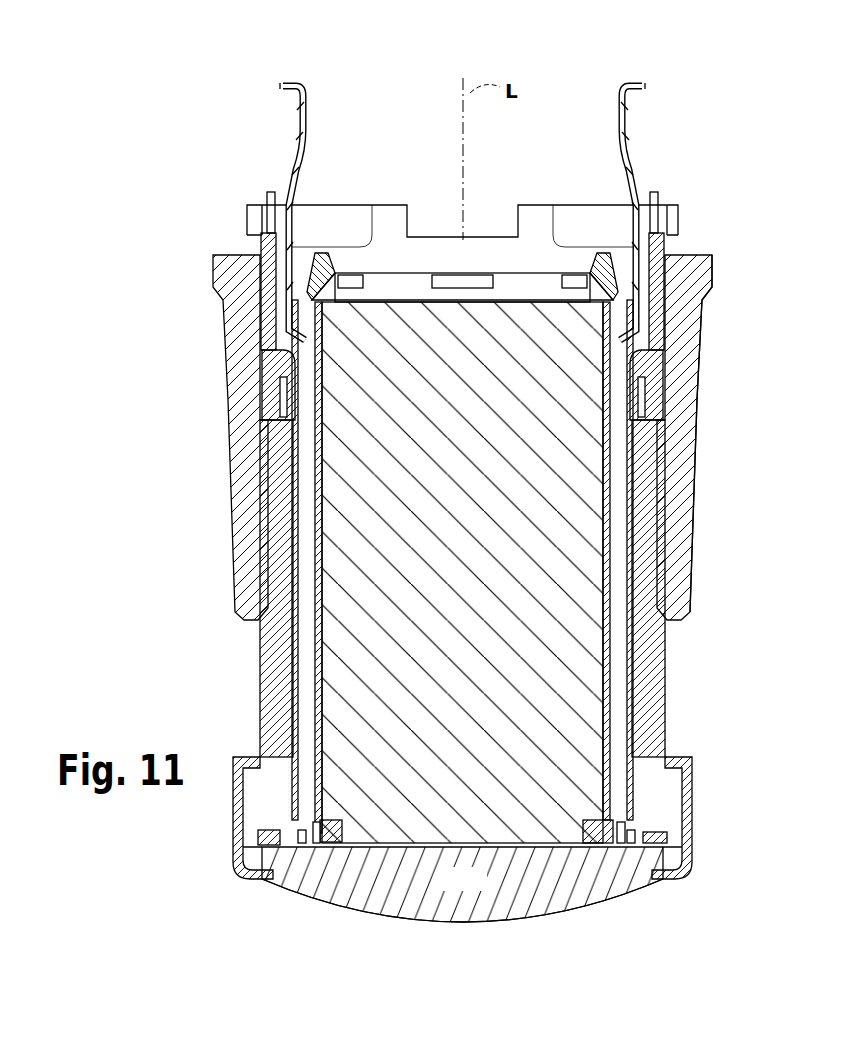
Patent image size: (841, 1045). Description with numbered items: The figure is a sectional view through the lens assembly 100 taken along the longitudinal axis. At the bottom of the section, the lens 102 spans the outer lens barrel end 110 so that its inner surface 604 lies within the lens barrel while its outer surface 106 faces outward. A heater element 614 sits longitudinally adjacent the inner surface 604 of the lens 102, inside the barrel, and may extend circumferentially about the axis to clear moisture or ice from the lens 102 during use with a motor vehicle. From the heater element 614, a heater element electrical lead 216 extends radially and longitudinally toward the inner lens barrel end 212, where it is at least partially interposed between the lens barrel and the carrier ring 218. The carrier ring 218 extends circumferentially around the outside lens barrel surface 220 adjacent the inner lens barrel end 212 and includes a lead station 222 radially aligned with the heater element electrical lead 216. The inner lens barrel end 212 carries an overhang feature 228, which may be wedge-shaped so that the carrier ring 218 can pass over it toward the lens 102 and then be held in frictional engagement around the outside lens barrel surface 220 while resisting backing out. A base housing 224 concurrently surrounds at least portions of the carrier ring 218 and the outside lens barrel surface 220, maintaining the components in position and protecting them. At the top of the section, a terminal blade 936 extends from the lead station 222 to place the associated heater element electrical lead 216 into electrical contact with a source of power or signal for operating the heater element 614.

The lens assembly 100 is at (705, 849).
The lens 102 is at (484, 889).
The outer surface 106 is at (588, 908).
The outer lens barrel end 110 is at (228, 880).
The inner lens barrel end 212 is at (311, 335).
The heater element electrical lead 216 is at (274, 258).
The carrier ring 218 is at (600, 246).
The outside lens barrel surface 220 is at (642, 338).
The lead station 222 is at (209, 406).
The base housing 224 is at (708, 322).
The overhang feature 228 is at (325, 258).
The inner surface 604 is at (533, 832).
The heater element 614 is at (618, 842).
The terminal blade 936 is at (276, 78).